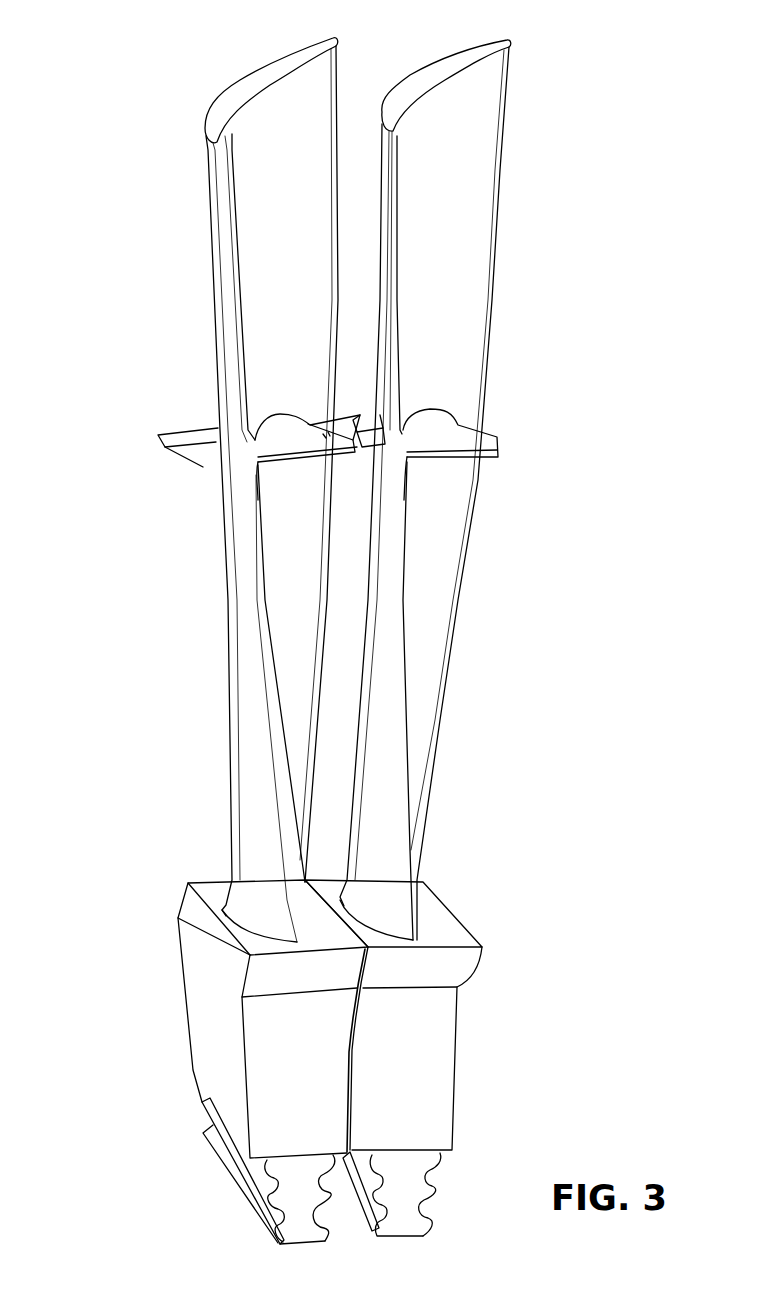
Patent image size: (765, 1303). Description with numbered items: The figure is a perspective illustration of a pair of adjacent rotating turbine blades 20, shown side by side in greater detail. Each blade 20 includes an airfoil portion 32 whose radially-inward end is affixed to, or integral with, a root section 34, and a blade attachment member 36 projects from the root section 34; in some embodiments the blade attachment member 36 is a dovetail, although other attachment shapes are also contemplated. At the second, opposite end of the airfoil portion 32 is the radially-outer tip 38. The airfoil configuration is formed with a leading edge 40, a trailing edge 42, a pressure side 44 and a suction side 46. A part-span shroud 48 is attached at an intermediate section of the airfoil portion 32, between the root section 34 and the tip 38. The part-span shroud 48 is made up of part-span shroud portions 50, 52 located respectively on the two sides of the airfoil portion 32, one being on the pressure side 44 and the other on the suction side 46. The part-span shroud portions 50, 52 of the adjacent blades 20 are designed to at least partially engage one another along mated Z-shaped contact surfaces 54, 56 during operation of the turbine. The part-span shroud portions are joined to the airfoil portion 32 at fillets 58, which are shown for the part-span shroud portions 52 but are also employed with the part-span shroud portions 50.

The blade 20 is at (176, 607).
The airfoil portion 32 is at (296, 244).
The root section 34 is at (277, 1070).
The blade attachment member 36 is at (300, 1225).
The radially-outer tip 38 is at (201, 88).
The leading edge 40 is at (215, 228).
The trailing edge 42 is at (335, 113).
The pressure side 44 is at (252, 752).
The suction side 46 is at (312, 265).
The part-span shroud 48 is at (290, 490).
The part-span shroud portion 50 is at (174, 431).
The part-span shroud portion 52 is at (297, 445).
The Z-shaped contact surface 54 is at (323, 434).
The Z-shaped contact surface 56 is at (328, 432).
The fillet 58 is at (262, 412).